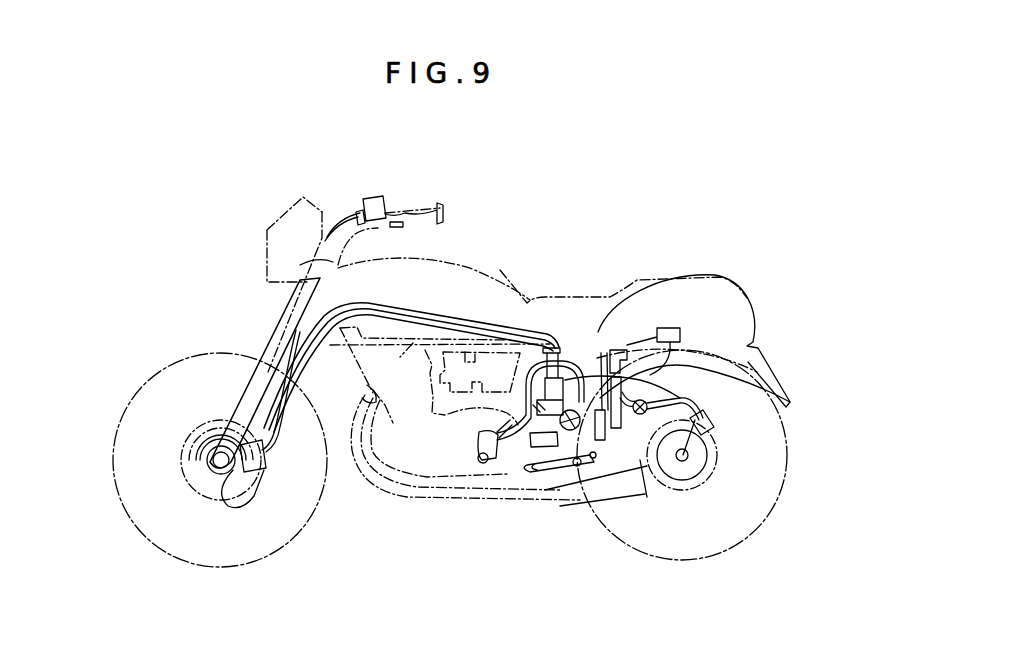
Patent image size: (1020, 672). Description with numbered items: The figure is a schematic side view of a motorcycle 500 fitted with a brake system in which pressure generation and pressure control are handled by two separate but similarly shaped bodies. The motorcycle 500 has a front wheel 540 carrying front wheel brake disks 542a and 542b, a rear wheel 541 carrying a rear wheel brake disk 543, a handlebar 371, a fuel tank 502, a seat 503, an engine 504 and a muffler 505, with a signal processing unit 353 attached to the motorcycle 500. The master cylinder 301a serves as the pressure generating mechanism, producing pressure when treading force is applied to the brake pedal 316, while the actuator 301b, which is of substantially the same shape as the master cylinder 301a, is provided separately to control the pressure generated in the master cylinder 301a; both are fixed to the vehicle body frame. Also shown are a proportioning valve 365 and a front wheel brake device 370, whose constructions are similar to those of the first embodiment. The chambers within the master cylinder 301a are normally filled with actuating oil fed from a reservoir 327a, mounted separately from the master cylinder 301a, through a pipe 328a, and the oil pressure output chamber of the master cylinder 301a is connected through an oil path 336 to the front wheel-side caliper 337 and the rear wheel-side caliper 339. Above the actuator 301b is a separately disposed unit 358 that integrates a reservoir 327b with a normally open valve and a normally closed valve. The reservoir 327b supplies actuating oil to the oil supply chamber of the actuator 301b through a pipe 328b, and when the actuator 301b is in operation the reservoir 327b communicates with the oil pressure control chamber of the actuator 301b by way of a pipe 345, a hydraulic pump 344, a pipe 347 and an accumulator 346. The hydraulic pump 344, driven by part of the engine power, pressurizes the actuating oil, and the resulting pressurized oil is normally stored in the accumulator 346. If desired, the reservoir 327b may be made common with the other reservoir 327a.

The master cylinder 301a is at (600, 458).
The actuator 301b is at (537, 470).
The brake pedal 316 is at (567, 456).
The reservoir 327a is at (607, 348).
The reservoir 327b is at (572, 330).
The pipe 328a is at (600, 398).
The pipe 328b is at (593, 350).
The oil path 336 is at (427, 312).
The front wheel-side caliper 337 is at (262, 474).
The rear wheel-side caliper 339 is at (710, 427).
The hydraulic pump 344 is at (468, 464).
The pipe 345 is at (464, 430).
The accumulator 346 is at (587, 505).
The pipe 347 is at (520, 472).
The signal processing unit 353 is at (680, 330).
The unit 358 is at (551, 346).
The proportioning valve 365 is at (555, 389).
The front wheel brake device 370 is at (372, 196).
The handlebar 371 is at (425, 200).
The motorcycle 500 is at (718, 273).
The fuel tank 502 is at (500, 275).
The seat 503 is at (583, 320).
The engine 504 is at (345, 400).
The muffler 505 is at (578, 478).
The front wheel 540 is at (253, 567).
The rear wheel 541 is at (717, 553).
The front wheel brake disk 542a is at (200, 500).
The front wheel brake disk 542b is at (221, 460).
The rear wheel brake disk 543 is at (715, 480).